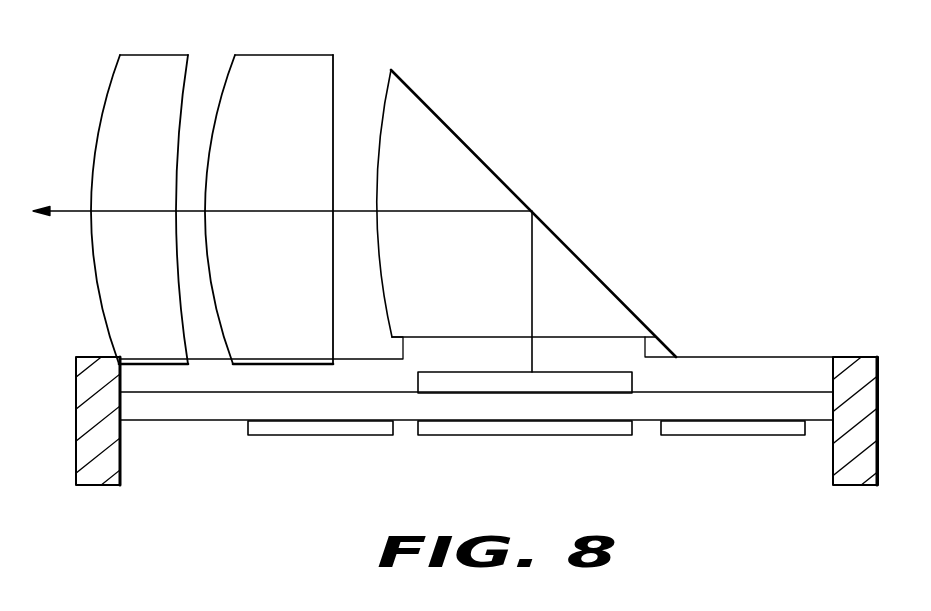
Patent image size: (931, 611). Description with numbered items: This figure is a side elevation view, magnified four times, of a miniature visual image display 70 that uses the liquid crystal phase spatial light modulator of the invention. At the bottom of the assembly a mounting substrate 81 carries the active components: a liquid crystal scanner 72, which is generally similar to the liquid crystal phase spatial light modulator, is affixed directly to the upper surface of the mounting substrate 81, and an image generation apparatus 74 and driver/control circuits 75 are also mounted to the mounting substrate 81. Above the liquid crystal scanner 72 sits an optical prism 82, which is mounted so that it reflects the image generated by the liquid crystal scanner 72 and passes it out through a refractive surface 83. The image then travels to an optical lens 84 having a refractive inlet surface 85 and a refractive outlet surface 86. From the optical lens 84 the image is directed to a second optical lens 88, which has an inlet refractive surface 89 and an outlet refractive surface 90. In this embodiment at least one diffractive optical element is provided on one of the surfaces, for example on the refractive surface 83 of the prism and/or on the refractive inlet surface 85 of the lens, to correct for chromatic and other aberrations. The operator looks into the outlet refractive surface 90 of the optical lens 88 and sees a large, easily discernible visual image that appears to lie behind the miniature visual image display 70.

The miniature visual image display 70 is at (327, 560).
The liquid crystal scanner 72 is at (632, 381).
The image generation apparatus 74 is at (524, 436).
The driver/control circuits 75 is at (317, 436).
The mounting substrate 81 is at (182, 421).
The optical prism 82 is at (440, 260).
The refractive surface 83 is at (390, 91).
The optical lens 84 is at (283, 260).
The refractive inlet surface 85 is at (335, 314).
The refractive outlet surface 86 is at (233, 60).
The optical lens 88 is at (148, 260).
The inlet refractive surface 89 is at (178, 168).
The outlet refractive surface 90 is at (114, 84).